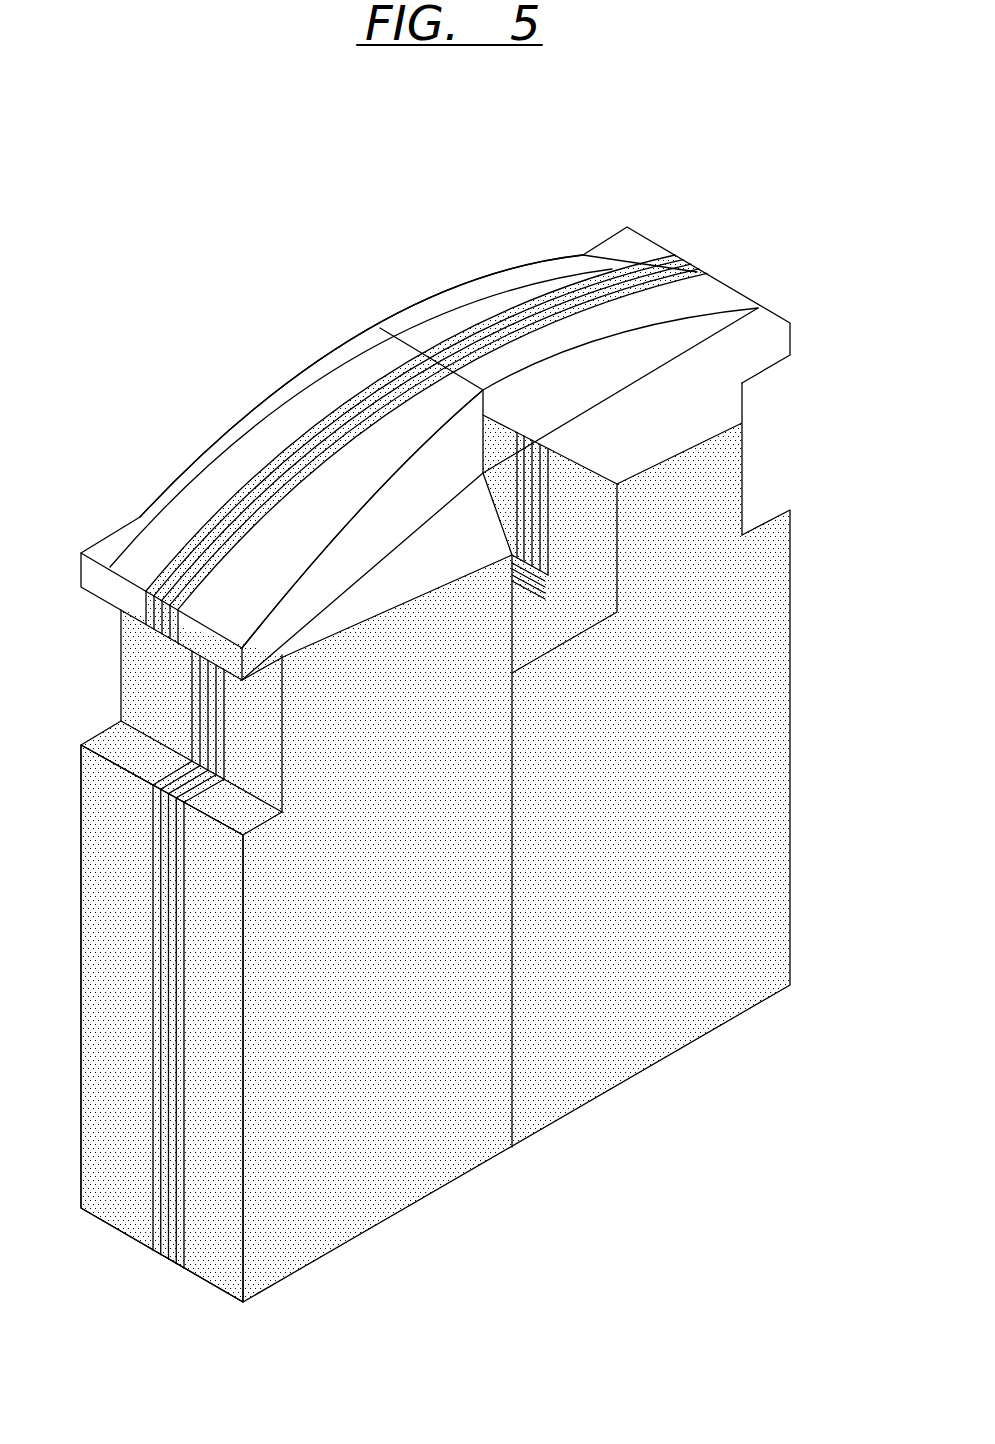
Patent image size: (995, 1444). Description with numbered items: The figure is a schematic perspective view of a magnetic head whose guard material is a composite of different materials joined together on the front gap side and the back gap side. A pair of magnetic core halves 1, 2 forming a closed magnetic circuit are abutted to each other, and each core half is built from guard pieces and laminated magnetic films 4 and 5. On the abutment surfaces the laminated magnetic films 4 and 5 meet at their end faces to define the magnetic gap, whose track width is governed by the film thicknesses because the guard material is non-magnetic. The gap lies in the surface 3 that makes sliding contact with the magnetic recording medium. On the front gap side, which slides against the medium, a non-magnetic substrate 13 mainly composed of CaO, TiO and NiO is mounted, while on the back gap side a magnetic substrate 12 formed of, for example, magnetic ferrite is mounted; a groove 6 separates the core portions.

The magnetic core half 1 is at (733, 775).
The magnetic core half 2 is at (393, 1160).
The surface 3 is at (650, 262).
The laminated magnetic film 4 is at (507, 310).
The laminated magnetic film 5 is at (300, 425).
The groove 6 is at (592, 532).
The magnetic substrate 12 is at (210, 1250).
The non-magnetic substrate 13 is at (290, 510).